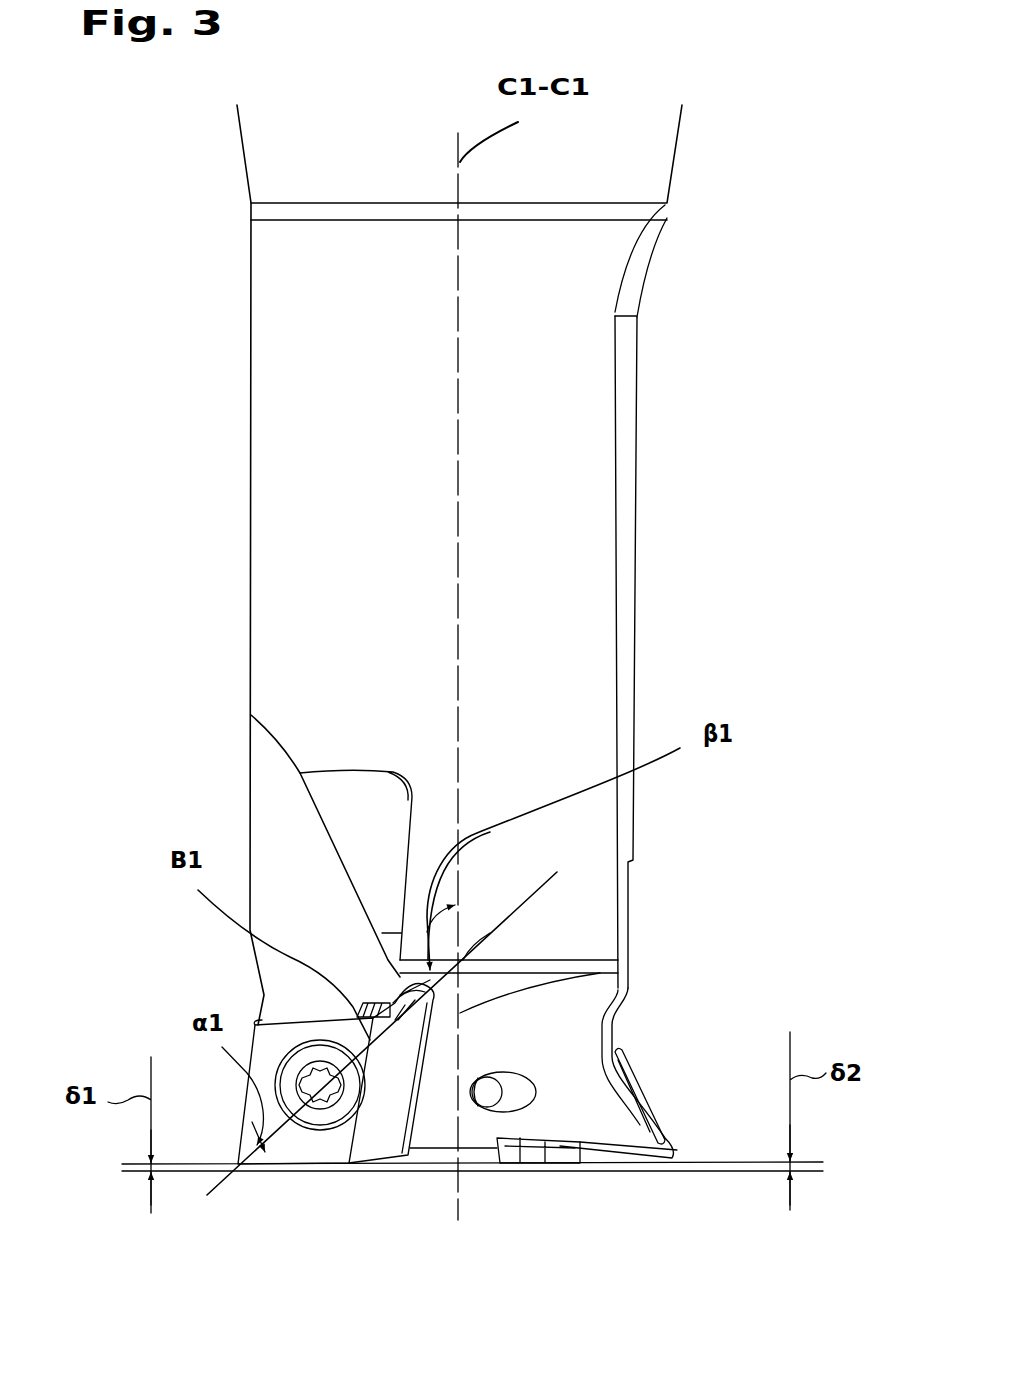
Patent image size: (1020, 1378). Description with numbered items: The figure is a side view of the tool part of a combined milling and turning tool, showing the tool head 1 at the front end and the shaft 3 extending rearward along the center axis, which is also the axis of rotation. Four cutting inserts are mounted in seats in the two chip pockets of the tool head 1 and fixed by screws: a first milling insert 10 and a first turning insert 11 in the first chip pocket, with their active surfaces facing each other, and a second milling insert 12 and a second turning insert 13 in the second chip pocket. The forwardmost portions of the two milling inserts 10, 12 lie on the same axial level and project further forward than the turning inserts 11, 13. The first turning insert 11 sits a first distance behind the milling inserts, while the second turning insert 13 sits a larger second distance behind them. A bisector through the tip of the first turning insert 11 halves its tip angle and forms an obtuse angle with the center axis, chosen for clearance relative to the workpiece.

The tool head 1 is at (442, 1197).
The shaft 3 is at (655, 517).
The first milling insert 10 is at (382, 1130).
The first turning insert 11 is at (250, 1023).
The second milling insert 12 is at (537, 1172).
The second turning insert 13 is at (650, 1090).